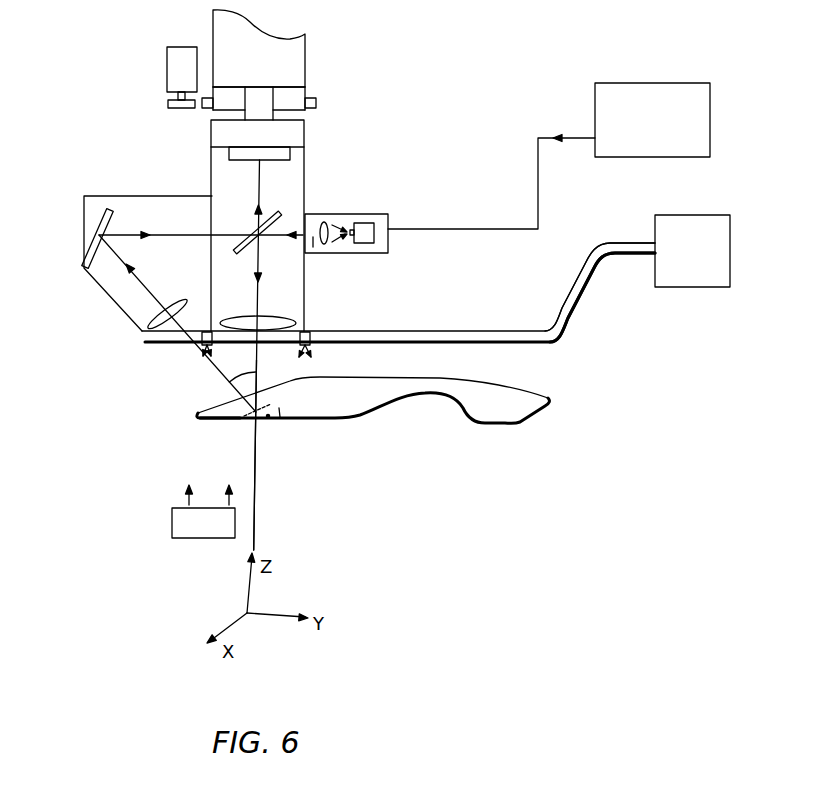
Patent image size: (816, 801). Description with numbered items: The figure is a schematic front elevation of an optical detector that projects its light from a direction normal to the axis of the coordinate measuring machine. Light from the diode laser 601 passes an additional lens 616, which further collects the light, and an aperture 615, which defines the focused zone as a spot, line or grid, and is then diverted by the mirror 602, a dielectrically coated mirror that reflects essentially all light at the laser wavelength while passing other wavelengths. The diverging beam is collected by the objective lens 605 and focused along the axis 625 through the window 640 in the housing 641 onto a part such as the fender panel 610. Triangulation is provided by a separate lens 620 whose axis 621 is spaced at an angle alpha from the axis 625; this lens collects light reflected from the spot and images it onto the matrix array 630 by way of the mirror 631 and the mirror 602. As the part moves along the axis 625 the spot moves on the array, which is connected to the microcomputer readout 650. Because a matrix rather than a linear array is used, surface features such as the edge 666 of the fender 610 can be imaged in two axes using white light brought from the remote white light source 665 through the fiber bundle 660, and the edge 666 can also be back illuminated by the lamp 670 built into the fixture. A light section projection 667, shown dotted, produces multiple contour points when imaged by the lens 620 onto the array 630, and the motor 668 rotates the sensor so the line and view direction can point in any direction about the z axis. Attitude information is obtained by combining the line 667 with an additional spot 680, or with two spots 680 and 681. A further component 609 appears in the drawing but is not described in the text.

The coordinate measuring machine 609 is at (307, 56).
The motor 668 is at (167, 68).
The matrix array 630 is at (288, 160).
The mirror 602 is at (276, 214).
The mirror 631 is at (93, 217).
The lens 620 is at (193, 273).
The window 640 is at (162, 342).
The axis 621 is at (214, 371).
The aperture 615 is at (312, 222).
The additional lens 616 is at (320, 248).
The diode laser 601 is at (386, 253).
The housing 641 is at (305, 296).
The objective lens 605 is at (296, 322).
The microcomputer readout 650 is at (671, 126).
The remote white light source 665 is at (709, 266).
The fiber bundle 660 is at (580, 308).
The light section projection 667 is at (277, 400).
The fender panel 610 is at (545, 405).
The edge 666 is at (234, 421).
The spot 680 is at (281, 414).
The spot 681 is at (268, 418).
The lamp 670 is at (172, 525).
The axis 625 is at (256, 530).